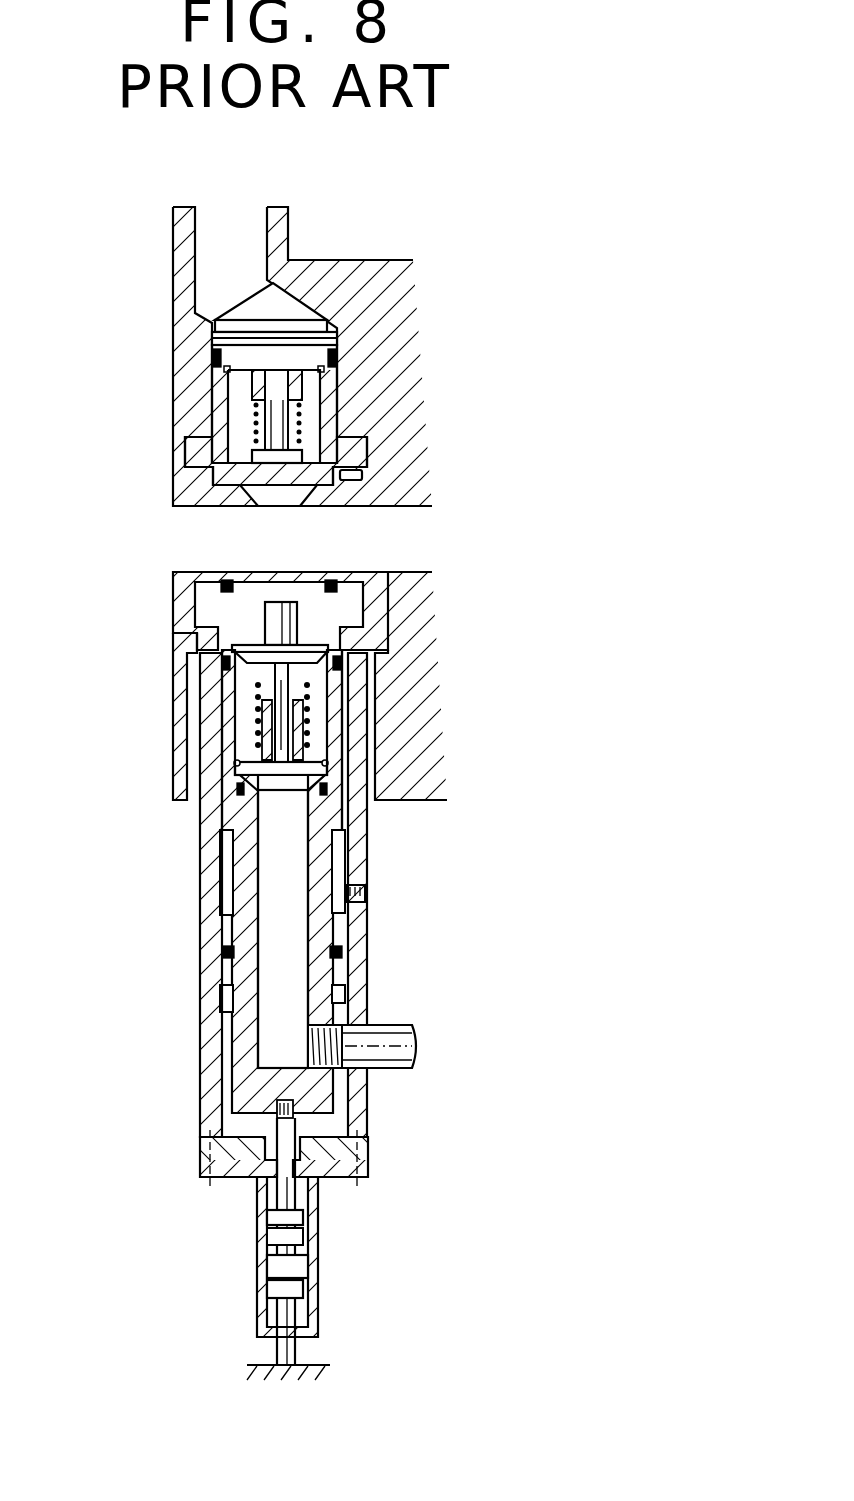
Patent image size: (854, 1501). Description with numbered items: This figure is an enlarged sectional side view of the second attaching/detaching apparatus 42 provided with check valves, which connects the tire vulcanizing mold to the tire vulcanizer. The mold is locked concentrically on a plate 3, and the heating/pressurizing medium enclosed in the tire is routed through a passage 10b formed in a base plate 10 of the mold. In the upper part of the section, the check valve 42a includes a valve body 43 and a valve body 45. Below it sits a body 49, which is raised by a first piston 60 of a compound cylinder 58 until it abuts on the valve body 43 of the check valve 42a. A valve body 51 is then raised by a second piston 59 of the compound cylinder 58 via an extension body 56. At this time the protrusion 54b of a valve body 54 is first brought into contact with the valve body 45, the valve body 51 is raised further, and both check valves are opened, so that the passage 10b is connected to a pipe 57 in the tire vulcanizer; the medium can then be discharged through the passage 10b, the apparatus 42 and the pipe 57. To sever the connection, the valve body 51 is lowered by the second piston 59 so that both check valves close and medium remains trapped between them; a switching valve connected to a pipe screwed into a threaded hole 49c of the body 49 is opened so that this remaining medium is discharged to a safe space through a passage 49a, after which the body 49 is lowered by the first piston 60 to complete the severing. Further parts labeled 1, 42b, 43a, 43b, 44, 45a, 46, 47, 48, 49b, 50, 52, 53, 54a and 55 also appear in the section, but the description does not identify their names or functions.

The fixed base 1 is at (312, 1364).
The plate 3 is at (400, 764).
The base plate 10 is at (380, 307).
The passage 10b is at (228, 230).
The second attaching/detaching apparatus provided with check valves 42 is at (267, 831).
The check valve 42a is at (173, 314).
The lower valve member 42b is at (173, 601).
The valve body 43 is at (350, 460).
The guide plug 43a is at (322, 418).
The passage 43b is at (316, 493).
The valve body 44 is at (316, 382).
The valve body 45 is at (270, 462).
The valve stem 45a is at (273, 432).
The spring 46 is at (252, 410).
The seal ring 47 is at (212, 368).
The cylinder 48 is at (370, 684).
The body 49 is at (362, 645).
The passage 49a is at (348, 717).
The bearing ring 49b is at (345, 866).
The threaded hole 49c is at (367, 896).
The seal ring 50 is at (331, 582).
The valve body 51 is at (243, 787).
The valve plate 52 is at (237, 767).
The spring 53 is at (262, 729).
The valve body 54 is at (262, 697).
The spring guide 54a is at (265, 700).
The protrusion 54b is at (270, 621).
The piston rod 55 is at (230, 796).
The extension body 56 is at (243, 923).
The pipe 57 is at (394, 1034).
The compound cylinder 58 is at (262, 1261).
The second piston 59 is at (287, 1218).
The first piston 60 is at (275, 1290).